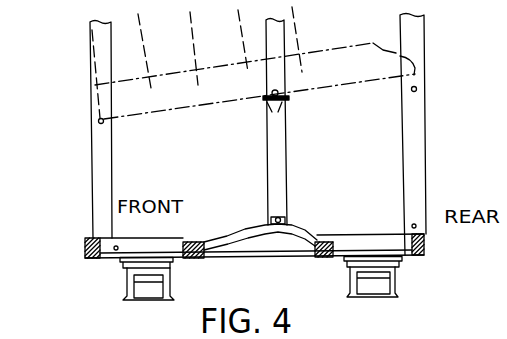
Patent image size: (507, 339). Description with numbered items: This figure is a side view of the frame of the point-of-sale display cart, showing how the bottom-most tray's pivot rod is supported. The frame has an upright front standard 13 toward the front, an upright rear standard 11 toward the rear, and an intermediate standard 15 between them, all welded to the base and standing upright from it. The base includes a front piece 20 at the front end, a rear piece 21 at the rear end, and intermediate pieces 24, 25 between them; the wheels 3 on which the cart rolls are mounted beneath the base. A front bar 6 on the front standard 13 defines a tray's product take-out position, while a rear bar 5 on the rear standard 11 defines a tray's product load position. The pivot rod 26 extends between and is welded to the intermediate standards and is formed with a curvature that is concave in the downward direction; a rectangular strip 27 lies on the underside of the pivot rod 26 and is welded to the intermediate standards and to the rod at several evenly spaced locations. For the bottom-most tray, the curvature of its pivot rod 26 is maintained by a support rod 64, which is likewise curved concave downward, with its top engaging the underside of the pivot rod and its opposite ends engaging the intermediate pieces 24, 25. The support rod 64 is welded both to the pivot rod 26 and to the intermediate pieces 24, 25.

The wheels 3 is at (127, 282).
The rear bar 5 is at (417, 88).
The front bar 6 is at (104, 125).
The upright rear standard 11 is at (419, 167).
The upright front standard 13 is at (99, 158).
The intermediate standard 15 is at (280, 151).
The front piece 20 is at (92, 259).
The rear piece 21 is at (424, 256).
The intermediate piece 24 is at (327, 258).
The intermediate piece 25 is at (195, 259).
The pivot rod 26 is at (277, 91).
The rectangular strip 27 is at (287, 122).
The support rod 64 is at (223, 237).